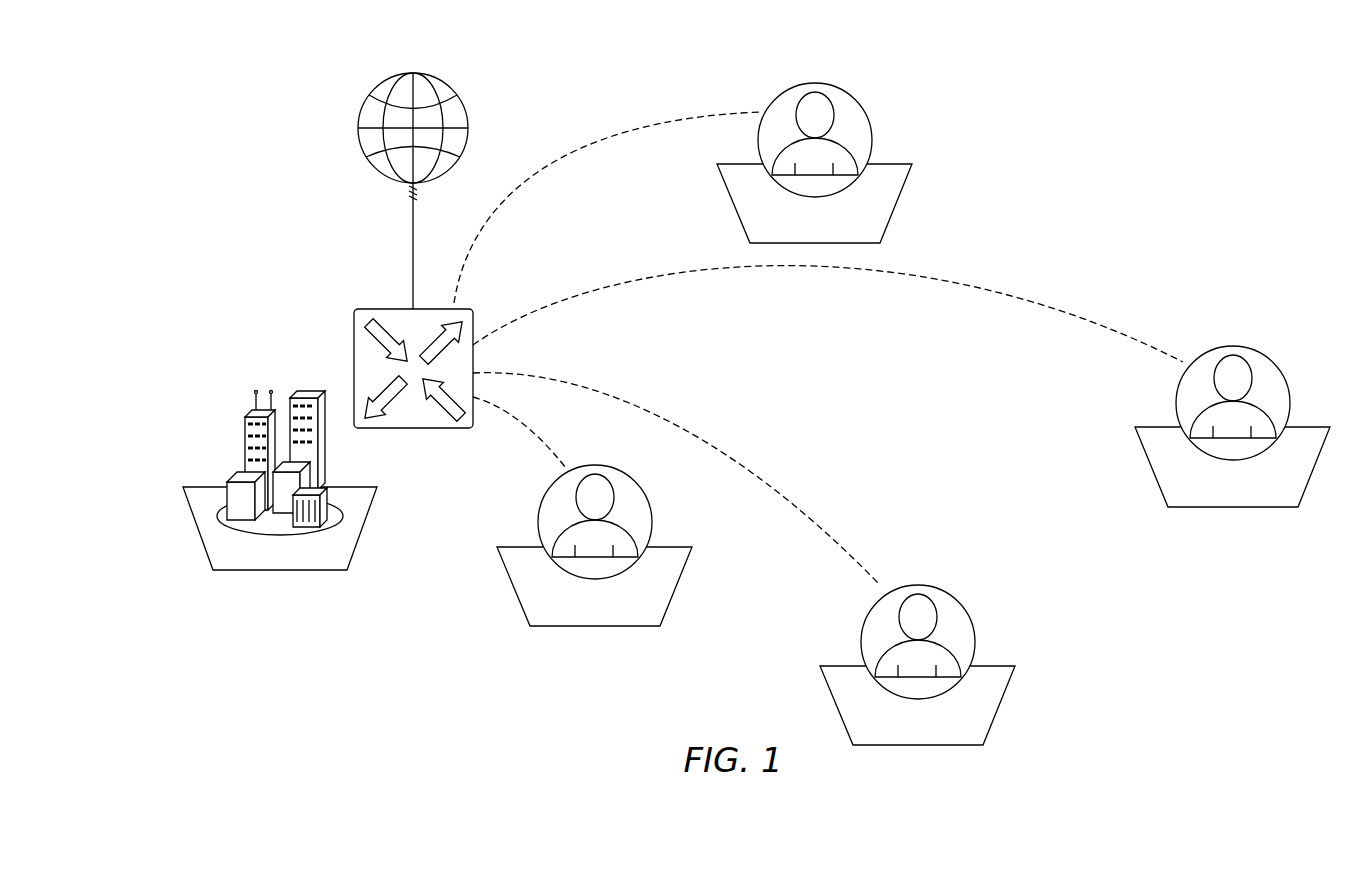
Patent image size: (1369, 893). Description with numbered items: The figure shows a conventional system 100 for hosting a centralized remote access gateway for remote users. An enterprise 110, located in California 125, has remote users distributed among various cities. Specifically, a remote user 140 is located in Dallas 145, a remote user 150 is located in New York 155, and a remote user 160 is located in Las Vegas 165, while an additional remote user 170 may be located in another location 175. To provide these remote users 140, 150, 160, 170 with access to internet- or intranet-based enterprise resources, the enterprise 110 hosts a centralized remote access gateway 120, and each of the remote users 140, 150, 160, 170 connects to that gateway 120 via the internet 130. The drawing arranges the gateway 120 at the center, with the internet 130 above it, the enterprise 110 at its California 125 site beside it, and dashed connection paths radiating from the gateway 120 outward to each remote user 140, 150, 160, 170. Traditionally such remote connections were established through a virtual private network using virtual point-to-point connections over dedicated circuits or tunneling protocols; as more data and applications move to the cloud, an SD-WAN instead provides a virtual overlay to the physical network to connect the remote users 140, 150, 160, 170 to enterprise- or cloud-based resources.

The system 100 is at (1110, 132).
The enterprise 110 is at (244, 434).
The centralized remote access gateway 120 is at (354, 333).
The California 125 is at (210, 500).
The internet 130 is at (360, 150).
The remote user 140 is at (975, 612).
The Dallas 145 is at (1000, 714).
The remote user 150 is at (1260, 350).
The New York 155 is at (1150, 470).
The remote user 160 is at (648, 506).
The Las Vegas 165 is at (680, 598).
The additional remote user 170 is at (866, 108).
The other location 175 is at (900, 214).